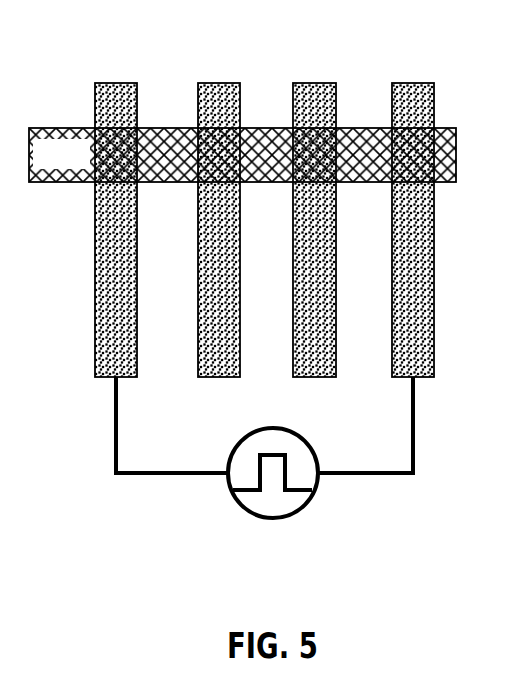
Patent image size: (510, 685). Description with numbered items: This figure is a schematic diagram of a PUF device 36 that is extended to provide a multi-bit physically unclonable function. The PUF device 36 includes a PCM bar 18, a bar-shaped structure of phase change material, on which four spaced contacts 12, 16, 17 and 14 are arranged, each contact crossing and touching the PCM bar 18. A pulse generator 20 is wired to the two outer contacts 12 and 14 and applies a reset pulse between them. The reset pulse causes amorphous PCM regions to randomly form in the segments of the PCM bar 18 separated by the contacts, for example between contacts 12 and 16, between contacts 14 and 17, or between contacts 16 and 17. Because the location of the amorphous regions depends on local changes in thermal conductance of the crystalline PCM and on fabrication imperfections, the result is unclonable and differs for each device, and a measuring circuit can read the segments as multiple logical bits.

The PUF device 36 is at (278, 53).
The PCM bar 18 is at (379, 166).
The contact 12 is at (129, 352).
The contact 16 is at (232, 352).
The contact 17 is at (327, 352).
The contact 14 is at (426, 352).
The pulse generator 20 is at (238, 503).